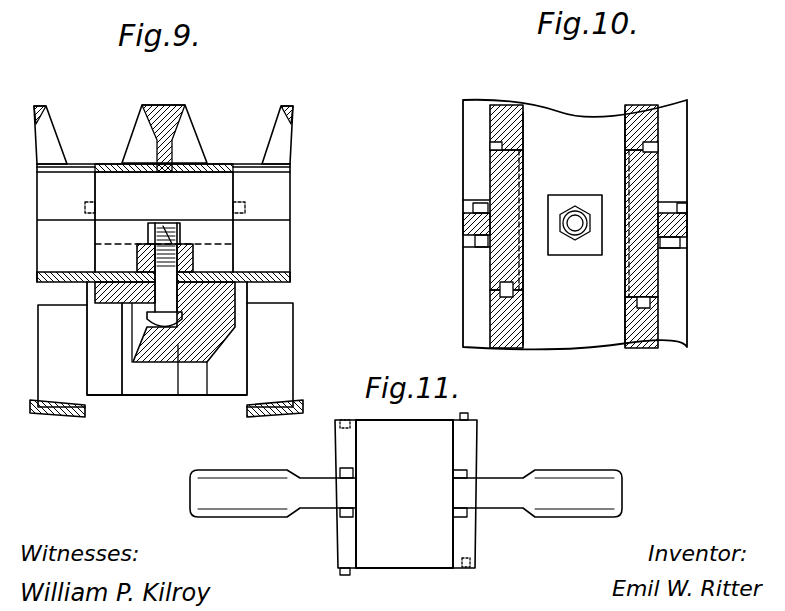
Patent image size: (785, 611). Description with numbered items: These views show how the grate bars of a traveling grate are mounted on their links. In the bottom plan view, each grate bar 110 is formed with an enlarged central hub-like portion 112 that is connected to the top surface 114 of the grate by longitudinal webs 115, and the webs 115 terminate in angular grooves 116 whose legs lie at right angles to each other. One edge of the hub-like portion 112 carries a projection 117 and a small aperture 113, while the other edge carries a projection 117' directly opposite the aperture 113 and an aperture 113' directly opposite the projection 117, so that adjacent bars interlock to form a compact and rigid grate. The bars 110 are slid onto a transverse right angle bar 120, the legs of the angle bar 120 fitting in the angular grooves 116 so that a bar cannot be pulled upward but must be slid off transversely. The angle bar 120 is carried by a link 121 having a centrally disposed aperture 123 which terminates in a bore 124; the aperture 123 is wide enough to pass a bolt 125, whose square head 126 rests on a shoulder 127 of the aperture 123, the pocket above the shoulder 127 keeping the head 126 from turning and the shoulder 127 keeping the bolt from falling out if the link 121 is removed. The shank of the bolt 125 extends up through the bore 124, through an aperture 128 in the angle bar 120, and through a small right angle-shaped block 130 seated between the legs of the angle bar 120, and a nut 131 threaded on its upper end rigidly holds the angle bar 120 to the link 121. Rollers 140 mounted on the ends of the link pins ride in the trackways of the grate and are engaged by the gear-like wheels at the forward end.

In FIG. 10, the grate bar 110 is at (695, 194).
In FIG. 11, the grate bar 110 is at (487, 452).
In FIG. 10, the hub-like portion 112 is at (504, 170).
In FIG. 11, the hub-like portion 112 is at (378, 569).
In FIG. 10, the aperture 113 is at (471, 210).
In FIG. 11, the aperture 113 is at (342, 480).
In FIG. 10, the aperture 113' is at (679, 226).
In FIG. 11, the aperture 113' is at (472, 509).
In FIG. 11, the top surface 114 is at (214, 470).
In FIG. 10, the webs 115 is at (477, 202).
In FIG. 11, the webs 115 is at (547, 482).
In FIG. 11, the angular grooves 116 is at (350, 467).
In FIG. 10, the projection 117 is at (683, 223).
In FIG. 11, the projection 117 is at (481, 406).
In FIG. 10, the projection 117' is at (466, 207).
In FIG. 11, the projection 117' is at (339, 586).
In FIG. 9, the right angle bar 120 is at (282, 243).
In FIG. 10, the right angle bar 120 is at (607, 325).
In FIG. 9, the link 121 is at (236, 300).
In FIG. 9, the aperture 123 is at (133, 348).
In FIG. 9, the bore 124 is at (190, 279).
In FIG. 9, the bolt 125 is at (168, 246).
In FIG. 10, the bolt 125 is at (576, 222).
In FIG. 9, the head 126 is at (163, 323).
In FIG. 9, the shoulder 127 is at (178, 345).
In FIG. 9, the aperture 128 is at (136, 277).
In FIG. 10, the aperture 128 is at (556, 197).
In FIG. 9, the right angle-shaped block 130 is at (191, 246).
In FIG. 10, the right angle-shaped block 130 is at (590, 200).
In FIG. 9, the nut 131 is at (150, 224).
In FIG. 10, the nut 131 is at (575, 256).
In FIG. 9, the rollers 140 is at (60, 408).